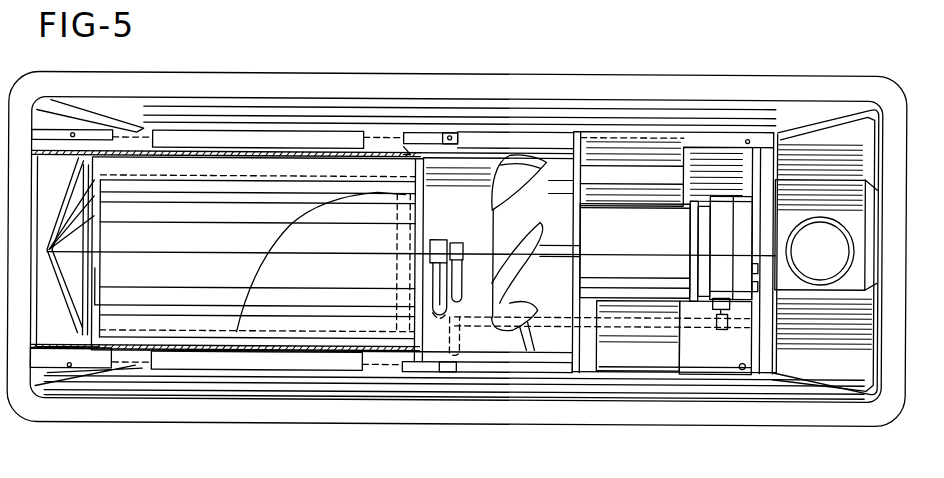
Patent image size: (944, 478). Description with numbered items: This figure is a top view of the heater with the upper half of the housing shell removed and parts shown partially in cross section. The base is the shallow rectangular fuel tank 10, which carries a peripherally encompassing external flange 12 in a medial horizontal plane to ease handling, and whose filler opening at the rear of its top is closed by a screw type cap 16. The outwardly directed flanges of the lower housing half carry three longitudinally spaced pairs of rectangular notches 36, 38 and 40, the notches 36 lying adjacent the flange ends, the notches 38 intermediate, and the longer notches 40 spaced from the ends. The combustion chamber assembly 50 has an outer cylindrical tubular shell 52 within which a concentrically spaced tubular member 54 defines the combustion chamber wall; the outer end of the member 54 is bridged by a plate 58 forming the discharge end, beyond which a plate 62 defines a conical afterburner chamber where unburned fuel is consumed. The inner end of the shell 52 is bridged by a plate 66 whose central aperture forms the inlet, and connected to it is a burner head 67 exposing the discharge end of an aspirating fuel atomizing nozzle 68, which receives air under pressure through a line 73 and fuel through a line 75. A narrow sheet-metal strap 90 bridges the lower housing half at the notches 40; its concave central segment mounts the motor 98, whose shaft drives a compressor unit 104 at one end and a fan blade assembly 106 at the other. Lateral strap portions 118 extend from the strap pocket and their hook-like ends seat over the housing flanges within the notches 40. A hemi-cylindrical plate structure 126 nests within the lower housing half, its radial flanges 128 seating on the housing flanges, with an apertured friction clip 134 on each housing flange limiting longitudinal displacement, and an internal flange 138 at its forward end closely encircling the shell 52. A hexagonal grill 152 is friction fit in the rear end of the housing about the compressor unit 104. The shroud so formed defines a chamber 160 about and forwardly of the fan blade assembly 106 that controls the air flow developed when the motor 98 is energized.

The fuel tank 10 is at (819, 430).
The external flange 12 is at (737, 425).
The screw type cap 16 is at (812, 262).
The rectangular notches 36 is at (150, 357).
The rectangular notches 38 is at (400, 362).
The rectangular notches 40 is at (678, 371).
The combustion chamber assembly 50 is at (52, 329).
The tubular shell 52 is at (200, 153).
The tubular member 54 is at (145, 334).
The plate 58 is at (100, 309).
The plate 62 is at (62, 222).
The plate 66 is at (395, 308).
The burner head 67 is at (418, 228).
The fuel atomizing nozzle 68 is at (410, 257).
The air line 73 is at (440, 285).
The fuel line 75 is at (464, 271).
The strap 90 is at (633, 136).
The motor 98 is at (617, 239).
The compressor unit 104 is at (735, 232).
The fan blade assembly 106 is at (510, 208).
The strap portions 118 is at (617, 364).
The plate structure 126 is at (557, 352).
The flange 128 is at (523, 372).
The friction clip 134 is at (453, 133).
The internal flange 138 is at (407, 150).
The hexagonal grill 152 is at (745, 158).
The chamber 160 is at (470, 167).